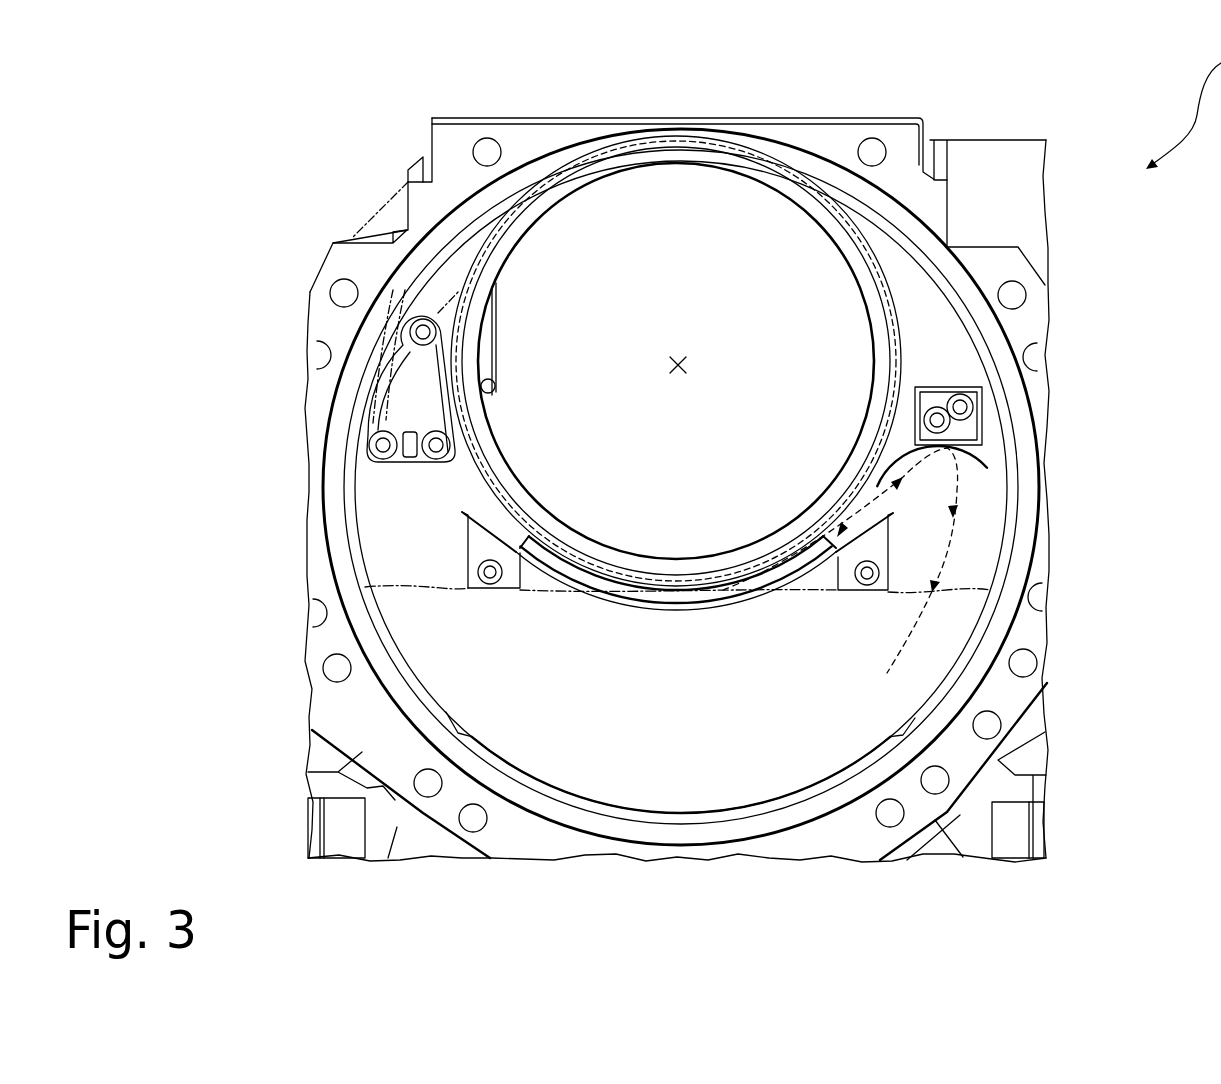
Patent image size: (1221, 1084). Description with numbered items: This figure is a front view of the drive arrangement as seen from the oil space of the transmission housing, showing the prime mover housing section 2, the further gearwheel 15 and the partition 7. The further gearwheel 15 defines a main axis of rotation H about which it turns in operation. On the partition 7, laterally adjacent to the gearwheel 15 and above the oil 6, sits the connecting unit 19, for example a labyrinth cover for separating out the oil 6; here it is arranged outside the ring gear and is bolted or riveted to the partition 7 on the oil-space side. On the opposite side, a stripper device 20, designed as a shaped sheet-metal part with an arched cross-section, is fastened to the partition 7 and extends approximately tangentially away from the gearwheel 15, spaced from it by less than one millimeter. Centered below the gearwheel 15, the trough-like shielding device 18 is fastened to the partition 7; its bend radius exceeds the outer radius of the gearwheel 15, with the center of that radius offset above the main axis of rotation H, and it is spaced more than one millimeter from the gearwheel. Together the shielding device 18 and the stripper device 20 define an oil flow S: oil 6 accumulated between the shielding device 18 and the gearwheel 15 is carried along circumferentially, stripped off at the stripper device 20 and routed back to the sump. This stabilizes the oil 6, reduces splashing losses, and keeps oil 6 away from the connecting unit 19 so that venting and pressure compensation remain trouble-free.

The prime mover housing section 2 is at (432, 202).
The oil 6 is at (665, 735).
The partition 7 is at (416, 545).
The further gearwheel 15 is at (887, 334).
The shielding device 18 is at (751, 591).
The connecting unit 19 is at (407, 398).
The stripper device 20 is at (988, 470).
The oil flow S is at (955, 518).
The main axis of rotation H is at (678, 365).